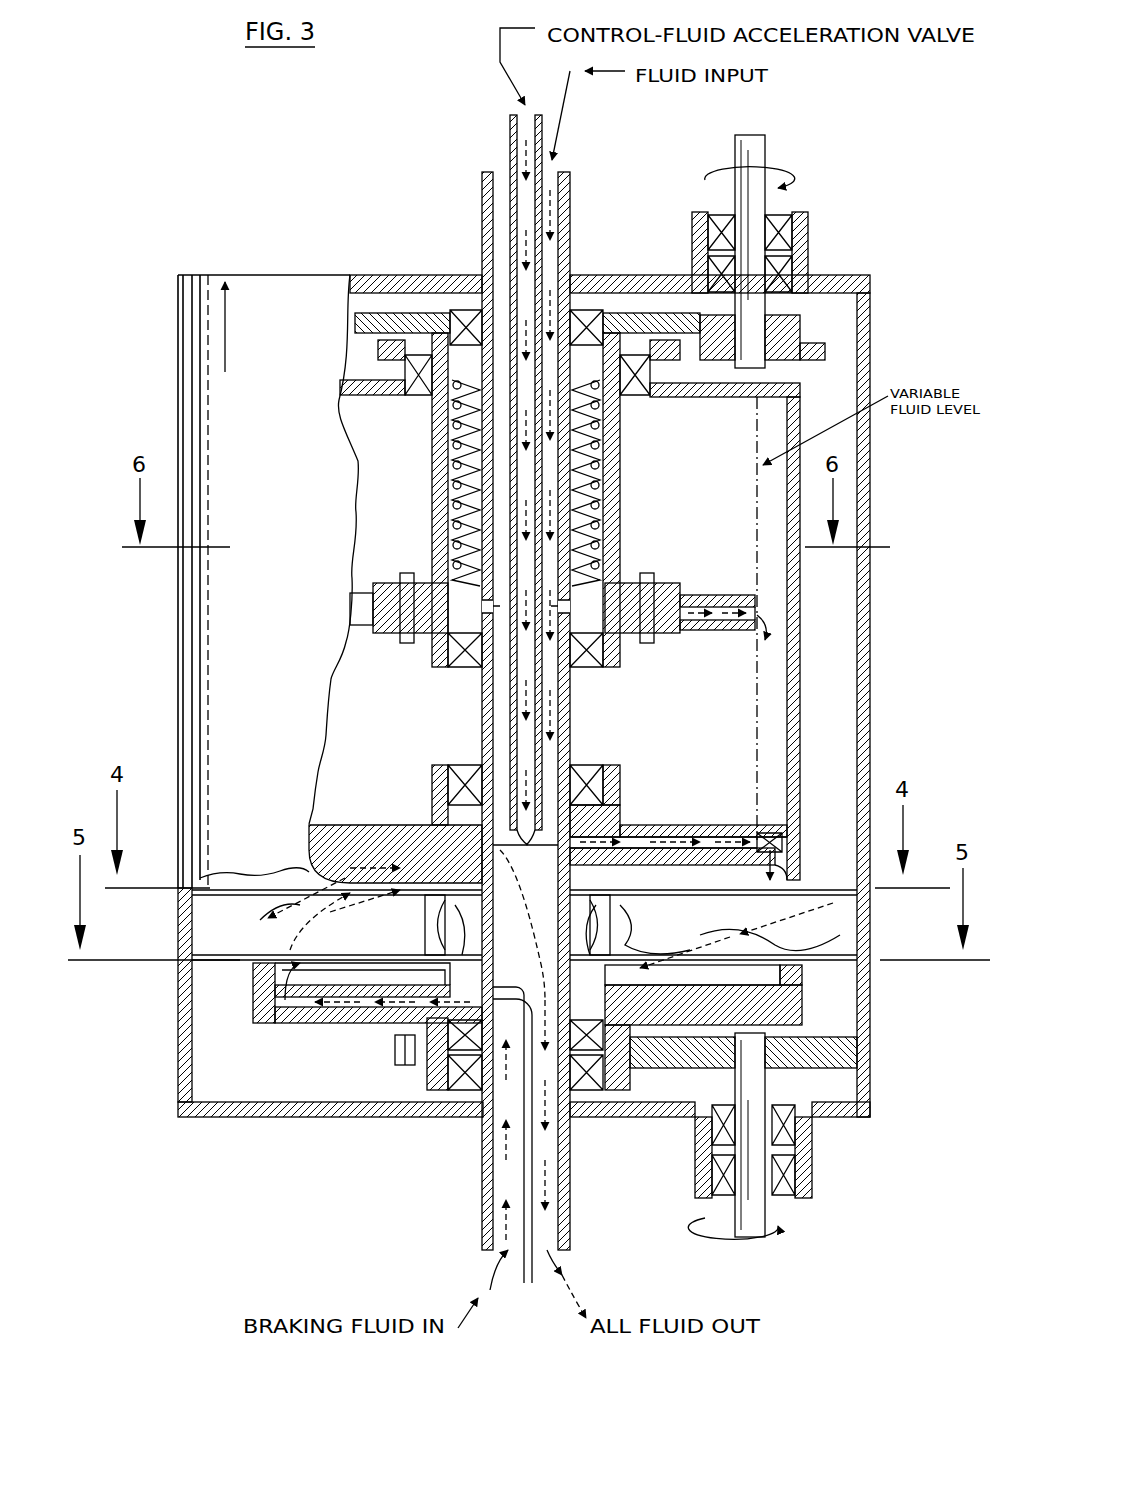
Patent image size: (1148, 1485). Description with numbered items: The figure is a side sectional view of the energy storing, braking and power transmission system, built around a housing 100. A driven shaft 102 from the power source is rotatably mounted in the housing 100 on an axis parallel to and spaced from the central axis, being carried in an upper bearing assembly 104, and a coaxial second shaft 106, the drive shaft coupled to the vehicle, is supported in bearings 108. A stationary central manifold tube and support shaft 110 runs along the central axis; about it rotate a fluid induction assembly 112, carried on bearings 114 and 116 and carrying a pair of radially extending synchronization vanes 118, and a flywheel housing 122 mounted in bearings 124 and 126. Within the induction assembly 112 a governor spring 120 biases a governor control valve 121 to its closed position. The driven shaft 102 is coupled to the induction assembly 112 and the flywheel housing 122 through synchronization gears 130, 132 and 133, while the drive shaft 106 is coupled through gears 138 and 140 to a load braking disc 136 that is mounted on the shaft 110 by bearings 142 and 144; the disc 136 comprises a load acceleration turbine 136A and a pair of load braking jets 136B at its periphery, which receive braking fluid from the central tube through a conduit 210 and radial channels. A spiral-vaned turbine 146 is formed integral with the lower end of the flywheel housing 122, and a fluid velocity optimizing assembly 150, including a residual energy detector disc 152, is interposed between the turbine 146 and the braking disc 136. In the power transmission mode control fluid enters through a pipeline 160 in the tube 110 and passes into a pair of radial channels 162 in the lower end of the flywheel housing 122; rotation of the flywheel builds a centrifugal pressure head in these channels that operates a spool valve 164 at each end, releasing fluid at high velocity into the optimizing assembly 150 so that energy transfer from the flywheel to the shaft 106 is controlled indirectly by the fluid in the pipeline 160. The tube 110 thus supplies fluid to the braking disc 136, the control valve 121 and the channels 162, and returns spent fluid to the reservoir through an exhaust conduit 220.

The housing 100 is at (200, 415).
The driven shaft 102 is at (750, 205).
The upper bearing assembly 104 is at (790, 243).
The second shaft 106 is at (748, 1240).
The bearings 108 is at (790, 1180).
The central manifold tube and support shaft 110 is at (482, 213).
The fluid induction assembly 112 is at (432, 468).
The bearing 114 is at (465, 322).
The bearing 116 is at (458, 668).
The synchronization vanes 118 is at (683, 598).
The governor spring 120 is at (608, 418).
The governor control valve 121 is at (443, 603).
The flywheel housing 122 is at (793, 765).
The bearing 124 is at (420, 388).
The bearing 126 is at (590, 772).
The synchronization gear 130 is at (805, 365).
The synchronization gear 132 is at (653, 318).
The synchronization gear 133 is at (665, 375).
The load braking disc 136 is at (268, 1022).
The load acceleration turbine 136A is at (760, 947).
The load braking jets 136B is at (340, 880).
The gear 138 is at (830, 1052).
The gear 140 is at (420, 1065).
The bearing 142 is at (395, 1030).
The bearing 144 is at (462, 1090).
The turbine 146 is at (267, 917).
The fluid velocity optimizing assembly 150 is at (860, 910).
The residual energy detector disc 152 is at (170, 1153).
The pipeline 160 is at (510, 140).
The radial channels 162 is at (653, 837).
The spool valve 164 is at (760, 828).
The conduit 210 is at (490, 1222).
The exhaust conduit 220 is at (550, 1205).